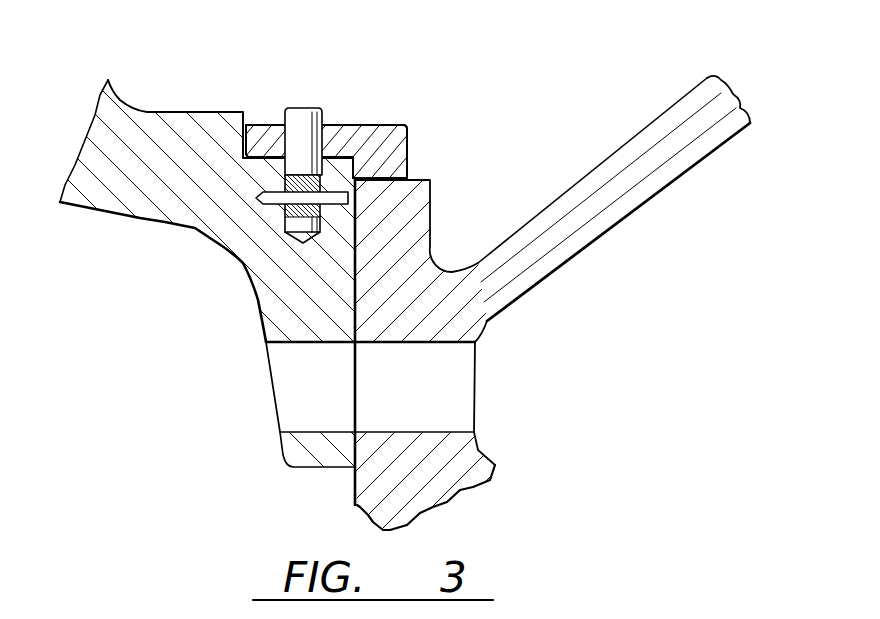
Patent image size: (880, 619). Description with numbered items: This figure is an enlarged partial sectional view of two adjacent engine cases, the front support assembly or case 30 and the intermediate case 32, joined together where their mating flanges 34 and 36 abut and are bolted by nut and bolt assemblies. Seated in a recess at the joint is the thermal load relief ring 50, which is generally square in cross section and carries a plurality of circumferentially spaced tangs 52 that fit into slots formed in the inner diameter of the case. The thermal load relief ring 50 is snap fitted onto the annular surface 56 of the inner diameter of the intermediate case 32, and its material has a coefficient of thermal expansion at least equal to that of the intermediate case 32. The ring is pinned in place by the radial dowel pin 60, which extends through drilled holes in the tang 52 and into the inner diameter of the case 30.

The front support assembly 30 is at (171, 112).
The intermediate case 32 is at (609, 157).
The mating flange 34 is at (258, 306).
The mating flange 36 is at (424, 318).
The thermal load relief ring 50 is at (396, 126).
The tang 52 is at (335, 126).
The annular surface 56 is at (422, 180).
The radial dowel pin 60 is at (297, 107).